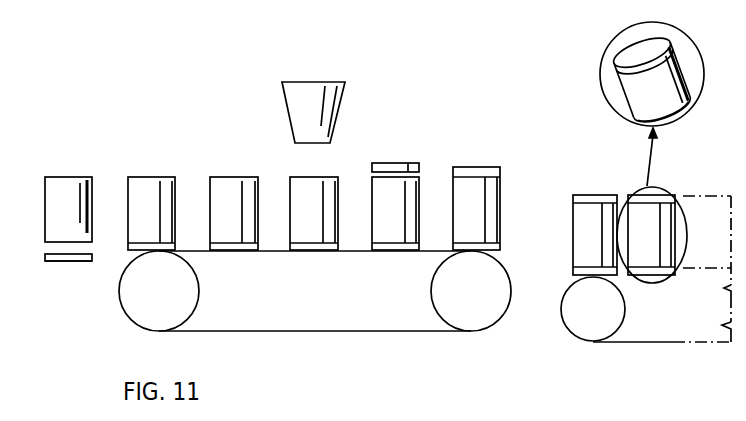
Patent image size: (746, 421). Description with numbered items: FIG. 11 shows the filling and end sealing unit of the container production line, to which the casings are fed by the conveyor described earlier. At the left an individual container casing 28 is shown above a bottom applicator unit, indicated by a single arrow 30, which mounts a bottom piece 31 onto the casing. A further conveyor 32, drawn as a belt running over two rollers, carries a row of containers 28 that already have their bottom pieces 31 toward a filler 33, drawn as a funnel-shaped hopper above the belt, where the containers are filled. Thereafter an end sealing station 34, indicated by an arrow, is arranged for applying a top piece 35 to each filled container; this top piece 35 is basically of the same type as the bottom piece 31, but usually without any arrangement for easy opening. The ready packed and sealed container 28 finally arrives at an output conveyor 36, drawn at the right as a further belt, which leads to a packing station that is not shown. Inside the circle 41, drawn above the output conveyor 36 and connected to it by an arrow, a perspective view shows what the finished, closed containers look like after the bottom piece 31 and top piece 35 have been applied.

The container casing 28 is at (88, 179).
The bottom applicator unit 30 is at (62, 274).
The bottom piece 31 is at (48, 265).
The further conveyor 32 is at (303, 333).
The filler 33 is at (291, 98).
The end sealing station 34 is at (385, 138).
The top piece 35 is at (382, 162).
The output conveyor 36 is at (613, 342).
The circle 41 is at (672, 121).